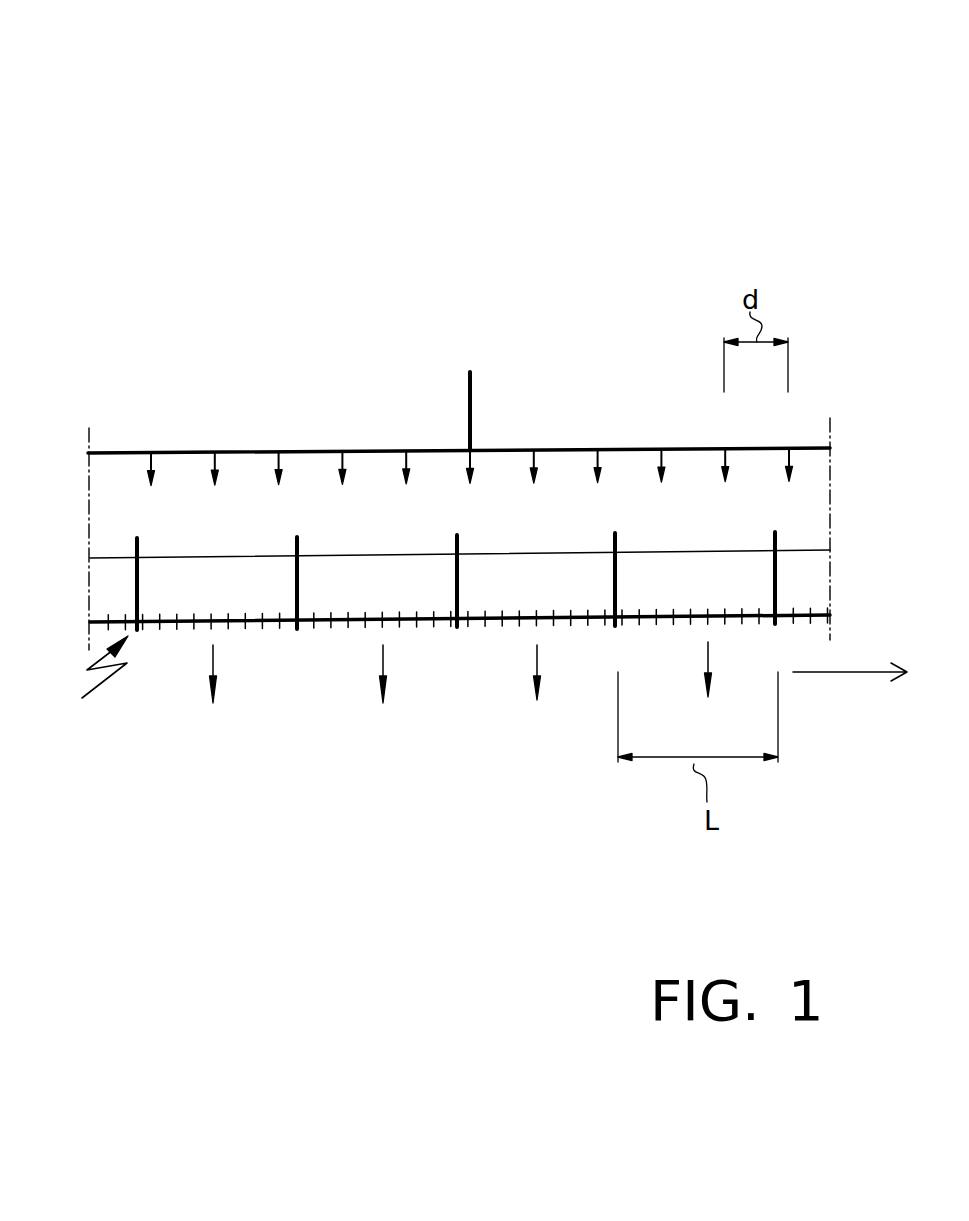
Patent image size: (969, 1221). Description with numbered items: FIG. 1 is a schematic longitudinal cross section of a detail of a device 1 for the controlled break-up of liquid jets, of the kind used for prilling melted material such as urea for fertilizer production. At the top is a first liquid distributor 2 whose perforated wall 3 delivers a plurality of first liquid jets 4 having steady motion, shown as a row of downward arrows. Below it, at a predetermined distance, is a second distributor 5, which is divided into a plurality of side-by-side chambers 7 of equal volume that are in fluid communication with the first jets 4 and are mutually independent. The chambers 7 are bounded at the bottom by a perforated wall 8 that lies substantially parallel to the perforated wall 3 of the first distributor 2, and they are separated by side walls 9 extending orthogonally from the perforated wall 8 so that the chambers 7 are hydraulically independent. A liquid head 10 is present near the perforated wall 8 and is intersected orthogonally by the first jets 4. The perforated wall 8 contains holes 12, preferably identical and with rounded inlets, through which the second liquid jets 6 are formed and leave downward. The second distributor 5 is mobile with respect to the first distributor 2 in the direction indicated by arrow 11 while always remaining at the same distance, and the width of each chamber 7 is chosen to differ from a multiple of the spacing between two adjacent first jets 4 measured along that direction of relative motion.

The device for the controlled break-up of liquid jets 1 is at (117, 123).
The first liquid distributor 2 is at (477, 391).
The perforated wall 3 is at (303, 452).
The first liquid jets 4 is at (157, 466).
The second distributor 5 is at (91, 676).
The second liquid jets 6 is at (227, 670).
The chambers 7 is at (512, 593).
The perforated wall 8 is at (800, 610).
The side walls 9 is at (135, 546).
The liquid head 10 is at (341, 556).
The arrow indicating direction of relative motion 11 is at (840, 672).
The holes 12 is at (553, 625).